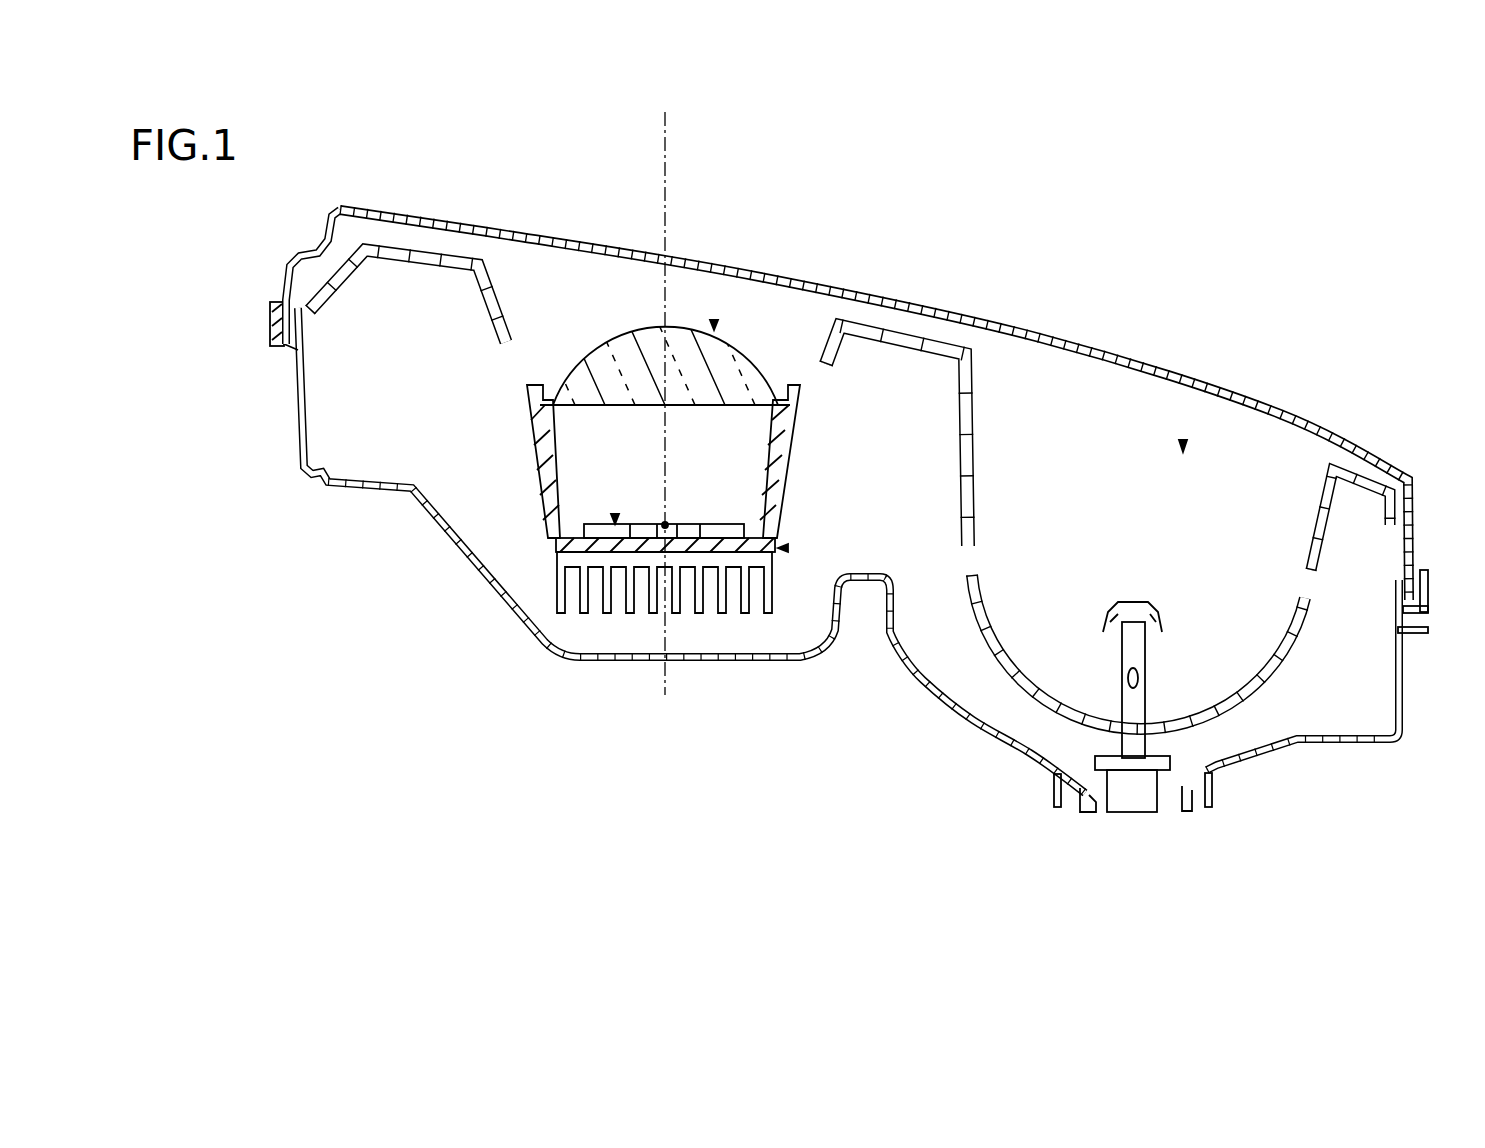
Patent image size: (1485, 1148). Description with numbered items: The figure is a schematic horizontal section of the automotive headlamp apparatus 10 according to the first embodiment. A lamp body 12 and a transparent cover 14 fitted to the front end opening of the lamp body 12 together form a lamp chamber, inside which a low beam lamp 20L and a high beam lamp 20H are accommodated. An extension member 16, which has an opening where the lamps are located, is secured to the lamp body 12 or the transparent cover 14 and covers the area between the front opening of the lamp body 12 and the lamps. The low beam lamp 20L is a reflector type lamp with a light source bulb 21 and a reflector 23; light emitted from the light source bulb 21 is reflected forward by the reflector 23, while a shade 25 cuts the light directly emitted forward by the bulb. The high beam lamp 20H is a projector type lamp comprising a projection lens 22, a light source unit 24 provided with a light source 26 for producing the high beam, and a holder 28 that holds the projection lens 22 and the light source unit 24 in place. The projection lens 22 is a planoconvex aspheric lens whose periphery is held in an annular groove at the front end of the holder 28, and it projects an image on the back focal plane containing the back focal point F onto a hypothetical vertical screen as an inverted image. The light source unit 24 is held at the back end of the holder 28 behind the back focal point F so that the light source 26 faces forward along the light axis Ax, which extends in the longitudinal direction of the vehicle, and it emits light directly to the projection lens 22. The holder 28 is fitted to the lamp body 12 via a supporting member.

The automotive headlamp apparatus 10 is at (862, 885).
The lamp body 12 is at (1352, 742).
The transparent cover 14 is at (1365, 440).
The extension member 16 is at (903, 340).
The high beam lamp 20H is at (659, 400).
The low beam lamp 20L is at (1183, 450).
The light source bulb 21 is at (1147, 677).
The projection lens 22 is at (578, 380).
The reflector 23 is at (1030, 672).
The light source unit 24 is at (788, 548).
The shade 25 is at (1157, 615).
The light source 26 is at (614, 516).
The holder 28 is at (795, 463).
The light axis Ax is at (665, 120).
The back focal point F is at (667, 520).